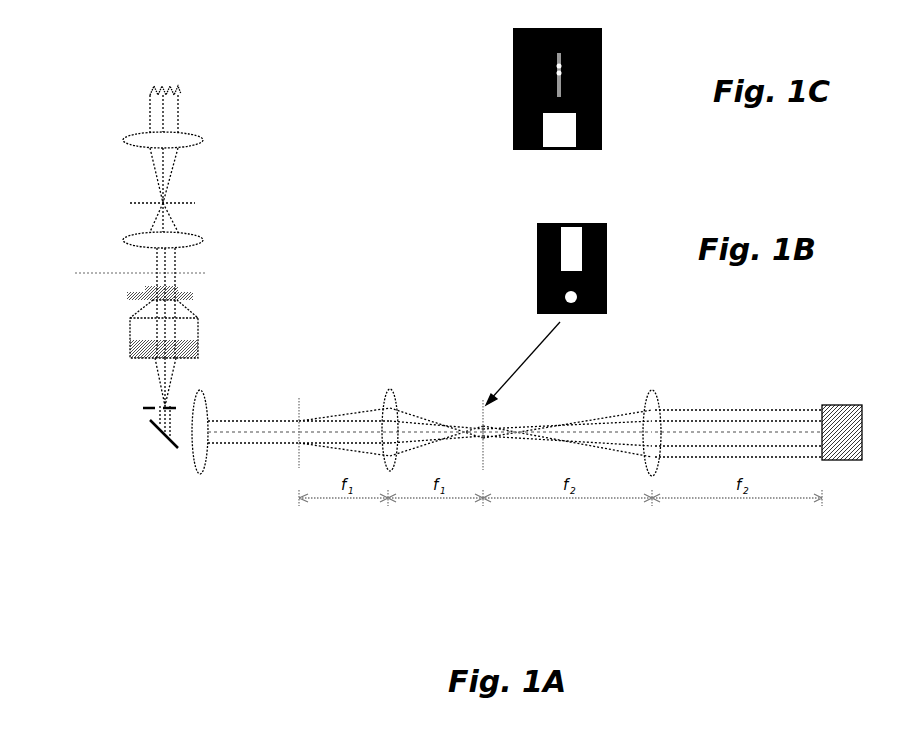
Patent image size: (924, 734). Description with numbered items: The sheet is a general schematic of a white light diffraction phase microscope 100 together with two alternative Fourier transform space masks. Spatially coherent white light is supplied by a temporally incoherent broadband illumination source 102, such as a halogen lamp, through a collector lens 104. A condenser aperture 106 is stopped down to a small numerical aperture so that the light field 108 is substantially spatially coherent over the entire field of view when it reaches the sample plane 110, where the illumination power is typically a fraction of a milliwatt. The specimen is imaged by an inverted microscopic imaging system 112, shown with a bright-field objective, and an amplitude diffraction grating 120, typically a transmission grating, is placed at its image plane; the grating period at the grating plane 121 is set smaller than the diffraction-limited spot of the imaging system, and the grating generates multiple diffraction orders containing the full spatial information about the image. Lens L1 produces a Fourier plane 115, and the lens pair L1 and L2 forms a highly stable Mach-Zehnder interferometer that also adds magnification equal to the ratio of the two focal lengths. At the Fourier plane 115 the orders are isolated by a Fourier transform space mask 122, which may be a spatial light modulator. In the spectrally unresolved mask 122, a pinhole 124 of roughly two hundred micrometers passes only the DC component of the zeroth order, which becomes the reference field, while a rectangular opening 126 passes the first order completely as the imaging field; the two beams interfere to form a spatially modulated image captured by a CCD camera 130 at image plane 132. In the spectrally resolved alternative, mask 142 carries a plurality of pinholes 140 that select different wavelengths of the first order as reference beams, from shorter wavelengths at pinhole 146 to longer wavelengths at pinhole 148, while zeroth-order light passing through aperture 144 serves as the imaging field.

In FIG. 1A, the white light diffraction phase microscope 100 is at (299, 92).
In FIG. 1A, the illumination source 102 is at (171, 85).
In FIG. 1A, the collector lens 104 is at (197, 140).
In FIG. 1A, the condenser aperture 106 is at (191, 203).
In FIG. 1A, the light field 108 is at (165, 262).
In FIG. 1A, the sample plane 110 is at (193, 293).
In FIG. 1A, the microscopic imaging system 112 is at (178, 313).
In FIG. 1A, the Fourier plane 115 is at (486, 455).
In FIG. 1A, the amplitude diffraction grating 120 is at (299, 399).
In FIG. 1A, the grating plane 121 is at (299, 503).
In FIG. 1B, the Fourier transform space mask 122 is at (606, 252).
In FIG. 1B, the pinhole 124 is at (577, 299).
In FIG. 1B, the rectangular opening 126 is at (568, 233).
In FIG. 1A, the CCD camera 130 is at (843, 411).
In FIG. 1A, the image plane 132 is at (821, 503).
In FIG. 1C, the pinholes 140 is at (568, 73).
In FIG. 1C, the mask 142 is at (604, 111).
In FIG. 1C, the aperture 144 is at (577, 130).
In FIG. 1C, the pinhole 146 is at (557, 92).
In FIG. 1C, the pinhole 148 is at (560, 56).
In FIG. 1A, the lens L1 is at (392, 390).
In FIG. 1A, the lens L2 is at (655, 390).